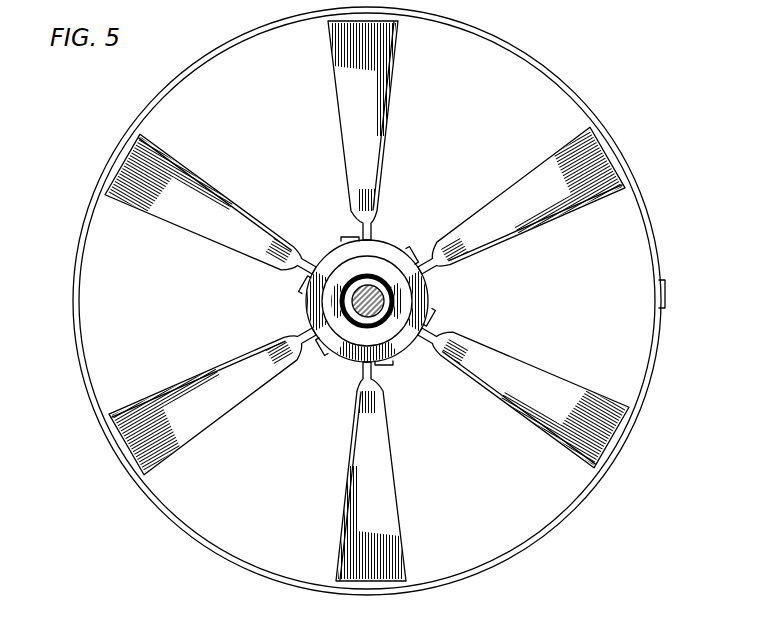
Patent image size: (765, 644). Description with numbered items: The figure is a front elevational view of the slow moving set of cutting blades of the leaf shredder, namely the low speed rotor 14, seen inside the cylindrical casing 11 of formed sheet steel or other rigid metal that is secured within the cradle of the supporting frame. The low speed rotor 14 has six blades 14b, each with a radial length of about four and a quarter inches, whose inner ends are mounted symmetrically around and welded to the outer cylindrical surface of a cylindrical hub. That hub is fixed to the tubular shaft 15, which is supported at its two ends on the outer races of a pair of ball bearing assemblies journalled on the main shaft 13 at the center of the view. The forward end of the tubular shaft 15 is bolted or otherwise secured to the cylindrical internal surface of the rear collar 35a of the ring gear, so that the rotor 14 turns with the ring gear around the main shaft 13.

The cylindrical casing 11 is at (540, 63).
The main shaft 13 is at (383, 294).
The low speed rotor 14 is at (595, 492).
The blades 14b is at (355, 128).
The tubular shaft 15 is at (382, 263).
The rear collar 35a is at (312, 318).